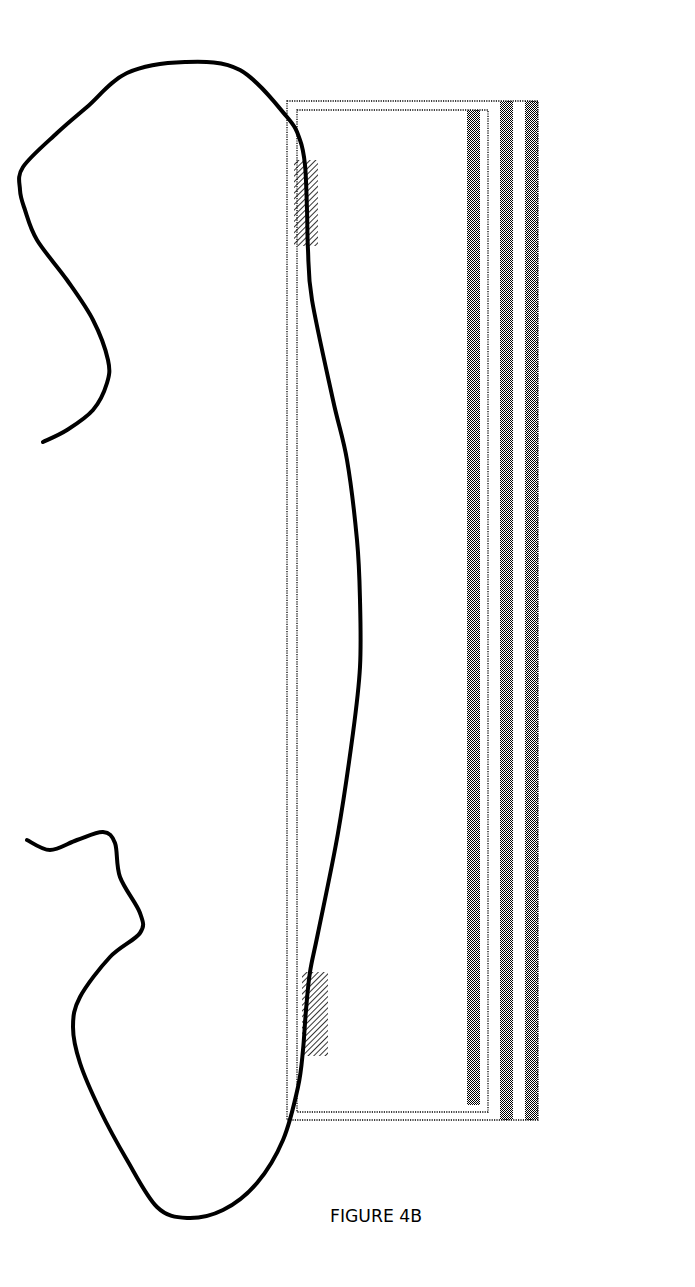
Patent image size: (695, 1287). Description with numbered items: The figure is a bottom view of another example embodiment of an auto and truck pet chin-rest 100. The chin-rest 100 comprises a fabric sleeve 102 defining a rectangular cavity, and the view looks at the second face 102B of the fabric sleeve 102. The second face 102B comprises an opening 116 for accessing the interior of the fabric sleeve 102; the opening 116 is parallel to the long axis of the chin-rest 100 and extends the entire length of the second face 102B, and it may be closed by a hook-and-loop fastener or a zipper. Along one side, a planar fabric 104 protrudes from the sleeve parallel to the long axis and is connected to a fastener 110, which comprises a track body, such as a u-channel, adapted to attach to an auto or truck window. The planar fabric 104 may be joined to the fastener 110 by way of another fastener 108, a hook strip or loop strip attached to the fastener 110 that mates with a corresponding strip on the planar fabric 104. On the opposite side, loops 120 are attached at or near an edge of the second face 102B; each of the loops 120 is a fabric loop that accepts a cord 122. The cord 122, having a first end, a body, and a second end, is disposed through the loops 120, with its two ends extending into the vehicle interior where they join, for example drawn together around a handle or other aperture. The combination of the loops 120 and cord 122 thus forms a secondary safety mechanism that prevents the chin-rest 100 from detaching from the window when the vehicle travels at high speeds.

The chin-rest 100 is at (392, 27).
The fabric sleeve 102 is at (292, 575).
The second face 102B is at (308, 505).
The planar fabric 104 is at (505, 100).
The another fastener 108 is at (540, 153).
The fastener 110 is at (516, 112).
The opening 116 is at (468, 103).
The loops 120 is at (293, 205).
The cord 122 is at (95, 95).